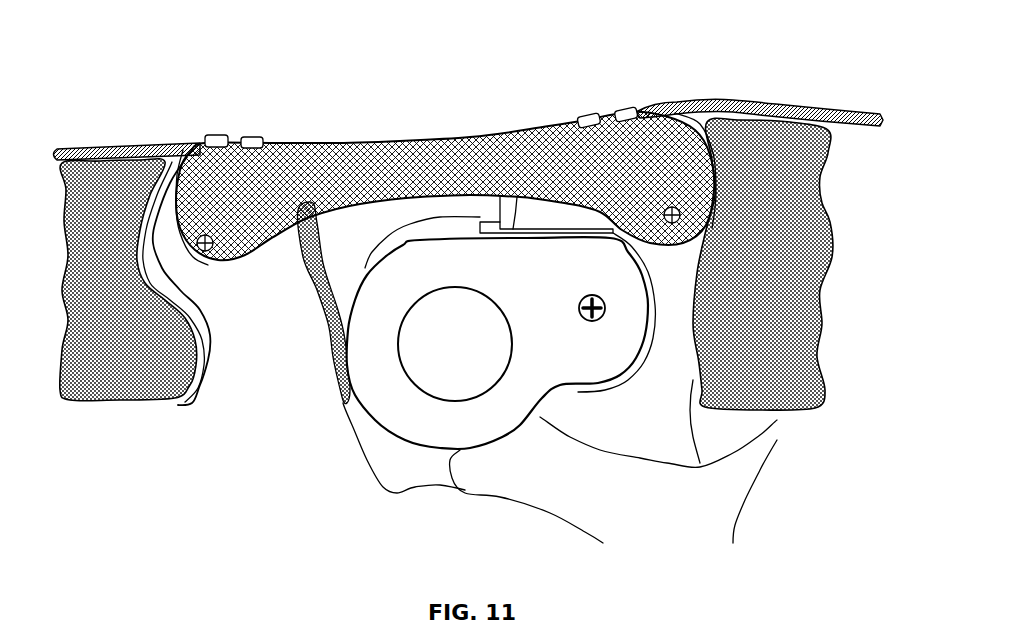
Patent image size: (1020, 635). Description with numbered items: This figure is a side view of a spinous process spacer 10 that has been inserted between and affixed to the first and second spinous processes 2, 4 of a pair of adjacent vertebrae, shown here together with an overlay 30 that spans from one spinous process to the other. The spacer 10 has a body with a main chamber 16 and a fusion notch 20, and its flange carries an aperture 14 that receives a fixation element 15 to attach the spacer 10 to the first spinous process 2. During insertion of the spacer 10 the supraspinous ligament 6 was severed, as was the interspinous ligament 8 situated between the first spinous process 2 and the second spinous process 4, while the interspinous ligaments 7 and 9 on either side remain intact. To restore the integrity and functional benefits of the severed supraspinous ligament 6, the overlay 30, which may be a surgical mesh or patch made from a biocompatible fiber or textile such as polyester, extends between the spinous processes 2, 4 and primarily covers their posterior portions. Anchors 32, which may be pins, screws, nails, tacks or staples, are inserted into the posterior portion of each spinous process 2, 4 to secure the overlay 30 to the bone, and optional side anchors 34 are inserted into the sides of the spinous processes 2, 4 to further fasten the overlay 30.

The first spinous process 2 is at (541, 218).
The second spinous process 4 is at (279, 271).
The supraspinous ligament 6 is at (134, 150).
The interspinous ligament 7 is at (803, 380).
The interspinous ligament 8 is at (337, 368).
The interspinous ligament 9 is at (140, 373).
The spinous process spacer 10 is at (372, 436).
The aperture 14 is at (600, 313).
The fixation element 15 is at (600, 299).
The main chamber 16 is at (445, 375).
The fusion notch 20 is at (488, 222).
The overlay 30 is at (398, 140).
The anchors 32 is at (256, 133).
The side anchors 34 is at (207, 252).